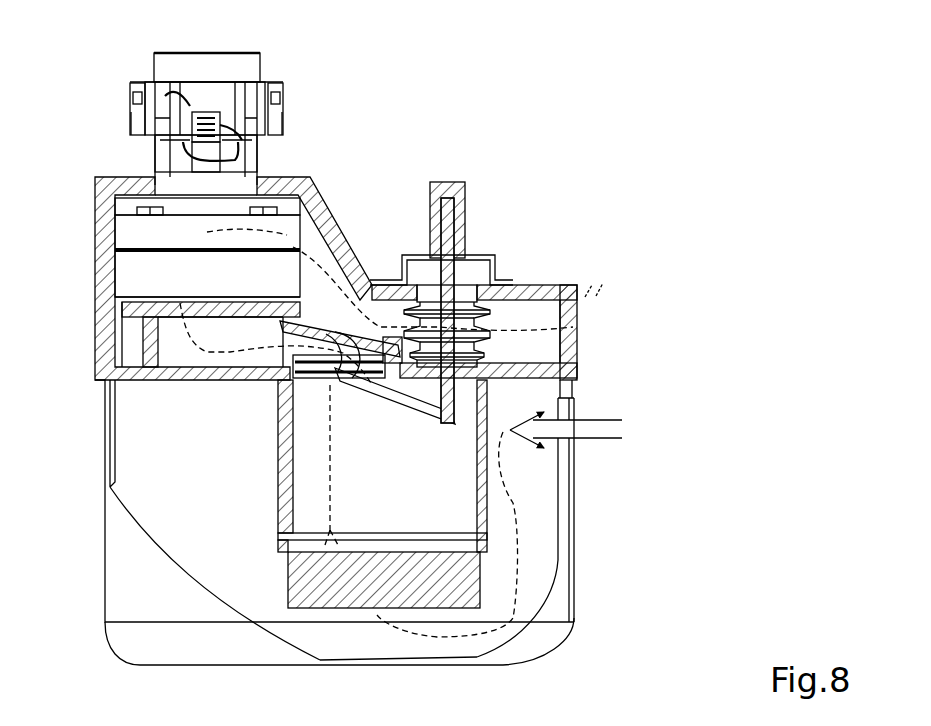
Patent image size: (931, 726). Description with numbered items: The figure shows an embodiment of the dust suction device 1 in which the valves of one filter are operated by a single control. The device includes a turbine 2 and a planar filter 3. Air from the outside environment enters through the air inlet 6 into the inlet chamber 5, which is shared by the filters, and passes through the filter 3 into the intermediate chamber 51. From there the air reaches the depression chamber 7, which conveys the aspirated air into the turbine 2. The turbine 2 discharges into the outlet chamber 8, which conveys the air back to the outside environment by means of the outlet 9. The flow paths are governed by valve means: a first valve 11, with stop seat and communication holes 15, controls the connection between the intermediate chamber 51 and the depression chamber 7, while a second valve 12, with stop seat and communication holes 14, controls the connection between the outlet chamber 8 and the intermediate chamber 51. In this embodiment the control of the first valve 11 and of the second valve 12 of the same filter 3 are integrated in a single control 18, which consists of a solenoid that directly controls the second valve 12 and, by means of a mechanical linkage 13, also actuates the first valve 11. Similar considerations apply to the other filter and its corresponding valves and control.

The dust suction device 1 is at (68, 106).
The turbine 2 is at (243, 72).
The planar filter 3 is at (457, 603).
The inlet chamber 5 is at (213, 568).
The air inlet 6 is at (567, 448).
The depression chamber 7 is at (115, 392).
The outlet chamber 8 is at (337, 225).
The outlet 9 is at (577, 334).
The first valve 11 is at (293, 340).
The second valve 12 is at (487, 327).
The mechanical linkage 13 is at (397, 402).
The communication holes 14 is at (577, 385).
The communication holes 15 is at (297, 357).
The single control 18 is at (463, 200).
The intermediate chamber 51 is at (443, 501).